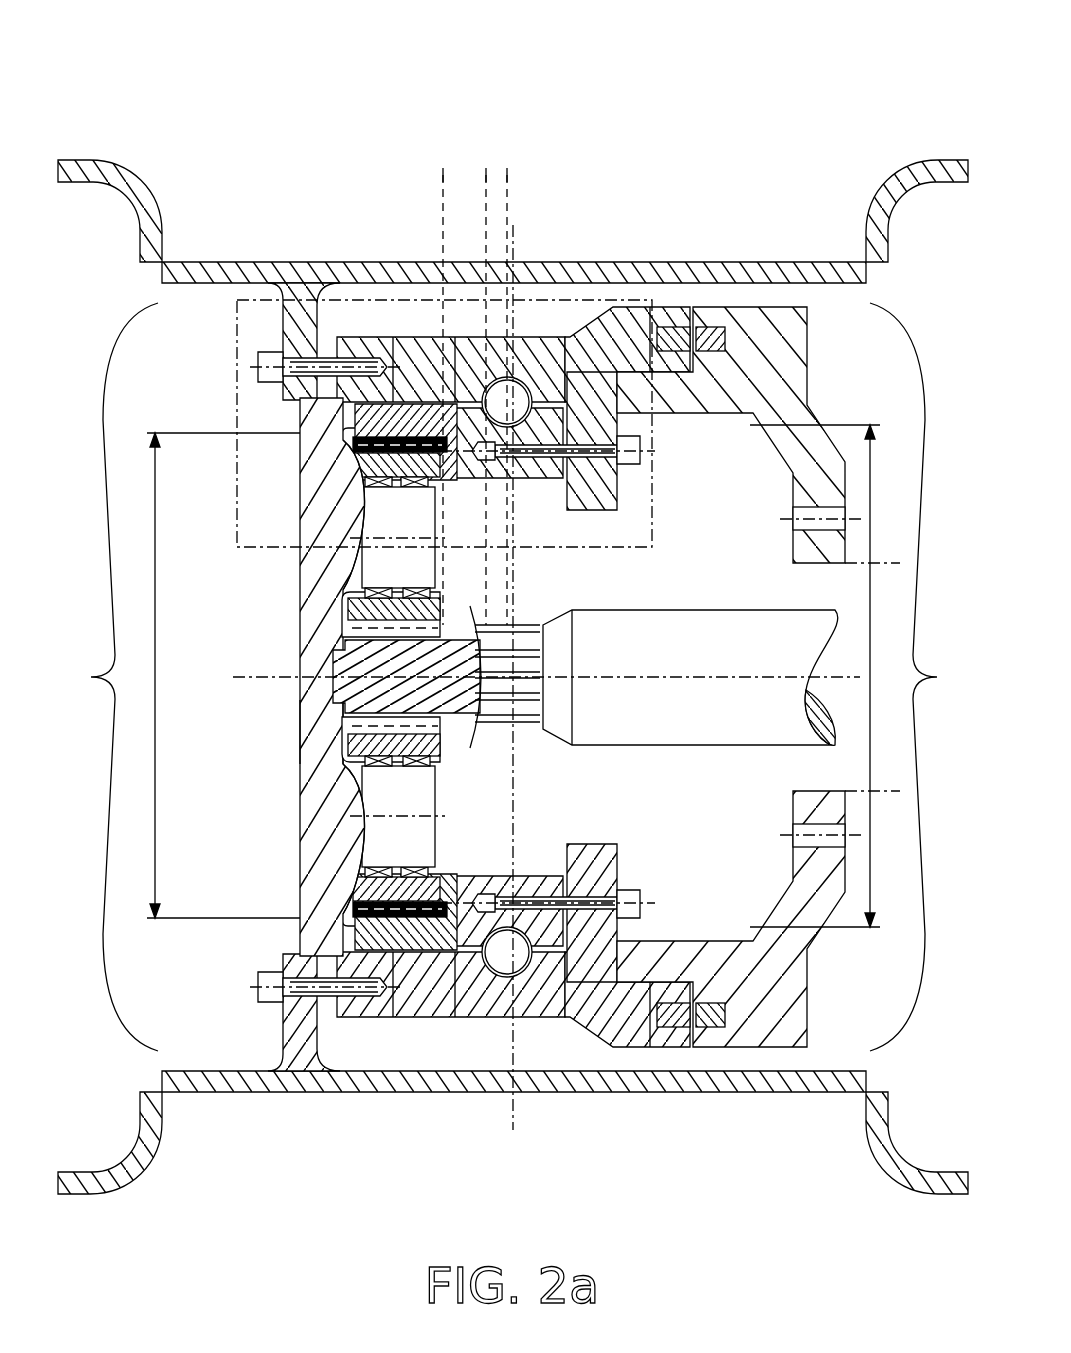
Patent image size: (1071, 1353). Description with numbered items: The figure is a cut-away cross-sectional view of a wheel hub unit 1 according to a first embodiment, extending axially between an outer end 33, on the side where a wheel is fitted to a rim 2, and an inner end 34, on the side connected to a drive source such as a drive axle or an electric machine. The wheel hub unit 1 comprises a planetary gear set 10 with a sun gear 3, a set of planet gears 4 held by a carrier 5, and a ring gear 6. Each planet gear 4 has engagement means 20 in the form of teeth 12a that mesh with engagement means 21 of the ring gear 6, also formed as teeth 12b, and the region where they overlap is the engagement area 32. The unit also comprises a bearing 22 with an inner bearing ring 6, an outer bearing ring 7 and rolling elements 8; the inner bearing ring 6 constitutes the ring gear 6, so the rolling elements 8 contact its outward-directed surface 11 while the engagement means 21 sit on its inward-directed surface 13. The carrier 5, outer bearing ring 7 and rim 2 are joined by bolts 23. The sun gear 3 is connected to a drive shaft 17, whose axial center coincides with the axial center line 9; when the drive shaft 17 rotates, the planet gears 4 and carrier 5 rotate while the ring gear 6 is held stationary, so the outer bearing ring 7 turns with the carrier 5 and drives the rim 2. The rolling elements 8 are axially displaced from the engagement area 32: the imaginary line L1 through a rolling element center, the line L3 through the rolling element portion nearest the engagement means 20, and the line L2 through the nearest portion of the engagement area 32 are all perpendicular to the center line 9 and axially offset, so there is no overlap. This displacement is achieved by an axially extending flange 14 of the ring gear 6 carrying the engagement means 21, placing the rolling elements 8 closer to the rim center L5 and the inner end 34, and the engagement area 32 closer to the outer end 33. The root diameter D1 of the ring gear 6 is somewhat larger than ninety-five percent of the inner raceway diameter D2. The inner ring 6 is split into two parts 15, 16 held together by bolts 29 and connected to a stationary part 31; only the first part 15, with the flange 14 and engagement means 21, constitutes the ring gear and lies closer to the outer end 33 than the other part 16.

The wheel hub unit 1 is at (310, 72).
The rim 2 is at (850, 258).
The sun gear 3 is at (380, 660).
The planet gears 4 is at (350, 610).
The carrier 5 is at (305, 740).
The ring gear 6 is at (475, 383).
The outer bearing ring 7 is at (552, 368).
The rolling elements 8 is at (511, 381).
The axial center line 9 is at (335, 720).
The planetary gear set 10 is at (321, 677).
The surface of the inner bearing ring 11 is at (500, 958).
The teeth 12a is at (300, 445).
The teeth 12b is at (365, 903).
The surface of the ring gear 13 is at (407, 930).
The flange 14 is at (350, 412).
The first part of the split inner bearing ring 15 is at (420, 492).
The second part of the split inner bearing ring 16 is at (430, 520).
The drive shaft 17 is at (712, 710).
The engagement means 20 is at (450, 337).
The engagement means 21 is at (385, 337).
The bearing 22 is at (645, 330).
The bolts 23 is at (268, 352).
The bolts 29 is at (762, 332).
The stationary part 31 is at (742, 330).
The engagement area 32 is at (400, 425).
The outer end 33 is at (108, 677).
The inner end 34 is at (919, 677).
The imaginary line L1 is at (507, 172).
The imaginary line L2 is at (443, 172).
The imaginary line L3 is at (486, 172).
The center of the rim L5 is at (553, 1118).
The root diameter D1 is at (206, 675).
The inner raceway diameter D2 is at (829, 676).